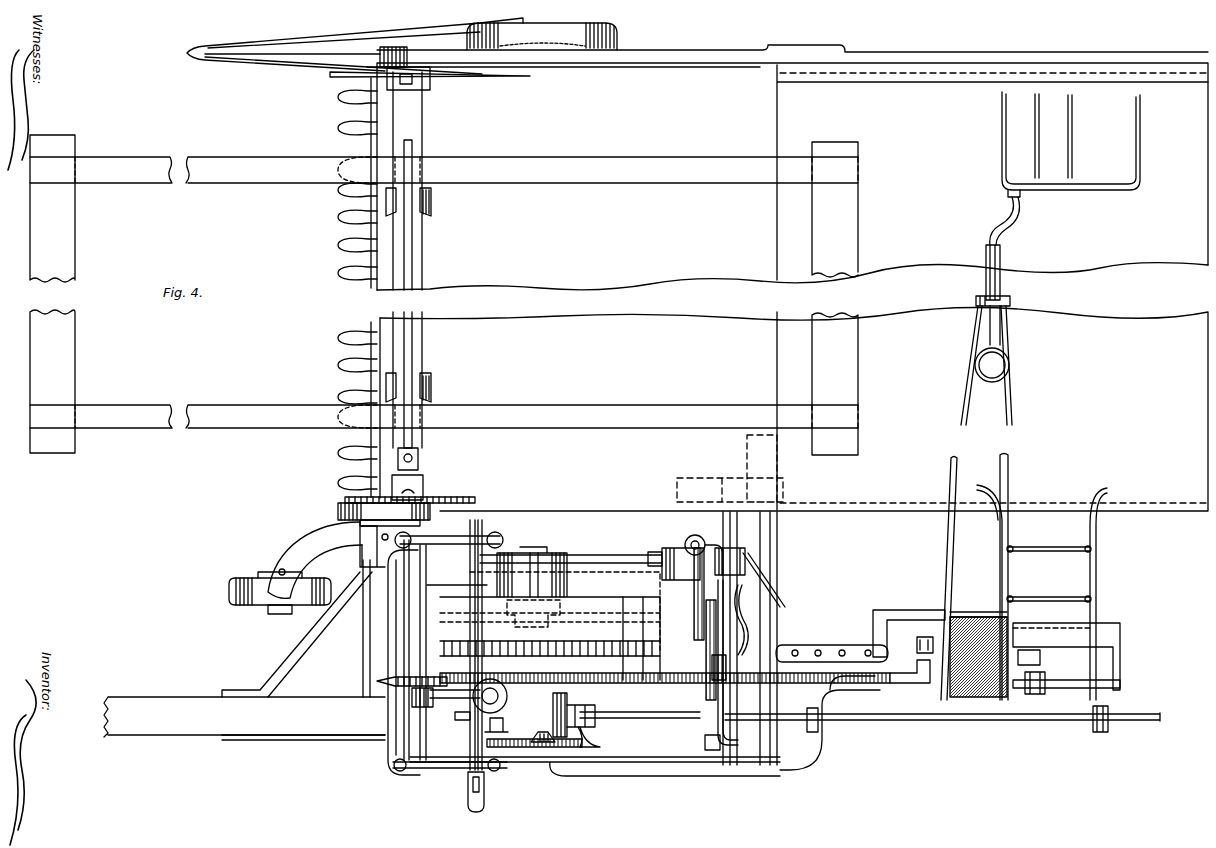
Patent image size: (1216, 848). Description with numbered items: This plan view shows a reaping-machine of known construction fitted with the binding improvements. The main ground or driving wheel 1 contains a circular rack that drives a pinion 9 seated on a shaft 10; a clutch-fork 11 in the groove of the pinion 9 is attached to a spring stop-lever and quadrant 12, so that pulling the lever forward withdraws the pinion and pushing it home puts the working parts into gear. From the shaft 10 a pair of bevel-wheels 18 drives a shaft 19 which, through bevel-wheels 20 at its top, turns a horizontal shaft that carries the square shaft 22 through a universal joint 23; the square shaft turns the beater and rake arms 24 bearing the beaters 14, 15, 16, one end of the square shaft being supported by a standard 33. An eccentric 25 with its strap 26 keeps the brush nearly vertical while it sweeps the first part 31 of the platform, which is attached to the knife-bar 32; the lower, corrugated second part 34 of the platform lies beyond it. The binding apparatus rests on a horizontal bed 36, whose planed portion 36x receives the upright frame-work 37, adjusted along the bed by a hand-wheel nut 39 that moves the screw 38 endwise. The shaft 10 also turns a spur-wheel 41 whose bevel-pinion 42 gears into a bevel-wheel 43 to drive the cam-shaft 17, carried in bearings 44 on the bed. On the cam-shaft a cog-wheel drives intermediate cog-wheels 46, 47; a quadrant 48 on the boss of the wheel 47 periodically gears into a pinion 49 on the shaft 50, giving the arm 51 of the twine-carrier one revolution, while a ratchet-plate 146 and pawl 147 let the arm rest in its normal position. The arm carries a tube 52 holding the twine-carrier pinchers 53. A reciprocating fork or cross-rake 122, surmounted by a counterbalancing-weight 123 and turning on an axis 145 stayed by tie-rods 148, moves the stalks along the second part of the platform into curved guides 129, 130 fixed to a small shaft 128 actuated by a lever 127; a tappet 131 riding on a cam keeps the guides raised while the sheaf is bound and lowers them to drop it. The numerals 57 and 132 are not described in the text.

The main ground or driving wheel 1 is at (543, 613).
The pinion 9 is at (550, 648).
The shaft 10 is at (500, 726).
The clutch-fork 11 is at (465, 721).
The spring stop-lever and quadrant 12 is at (486, 792).
The beater 14 is at (51, 294).
The beater 15 is at (400, 294).
The beater 16 is at (835, 298).
The cam-shaft 17 is at (881, 710).
The pair of bevel-wheels 18 is at (497, 697).
The shaft 19 is at (455, 687).
The pair of bevel-wheels 20 is at (413, 696).
The square shaft 22 is at (408, 257).
The universal joint 23 is at (414, 458).
The beater and rake arms 24 is at (444, 292).
The eccentric 25 is at (328, 560).
The strap 26 is at (406, 511).
The first part of the platform 31 is at (792, 287).
The knife-bar 32 is at (362, 287).
The standard 33 is at (697, 47).
The second part of the platform 34 is at (992, 287).
The horizontal frame or bed 36 is at (625, 608).
The portion of the bed 36x is at (1066, 672).
The upright frame-work 37 is at (926, 637).
The screw 38 is at (685, 678).
The hand-wheel nut 39 is at (713, 662).
The spur-wheel 41 is at (534, 736).
The bevel-pinion 42 is at (541, 728).
The bevel-wheel 43 is at (570, 719).
The bearings 44 is at (952, 727).
The intermediate cog-wheel 46 is at (720, 690).
The intermediate cog-wheel 47 is at (729, 620).
The quadrant 48 is at (694, 594).
The pinion 49 is at (590, 569).
The shaft 50 is at (730, 563).
The arm of the twine-carrier 51 is at (832, 640).
The tube 52 is at (909, 626).
The twine-carrier pinchers 53 is at (978, 608).
The clip 57 is at (1030, 652).
The reciprocating fork or cross-rake 122 is at (1071, 144).
The counterbalancing-weight 123 is at (986, 360).
The lever 127 is at (1035, 687).
The small shaft 128 is at (1066, 663).
The curved guide 129 is at (1102, 594).
The curved guide 130 is at (1034, 592).
The tappet 131 is at (1017, 577).
The spool 132 is at (978, 657).
The axis of the rake 145 is at (1010, 295).
The ratchet-plate 146 is at (686, 548).
The pawl 147 is at (663, 575).
The tie-rods 148 is at (950, 473).